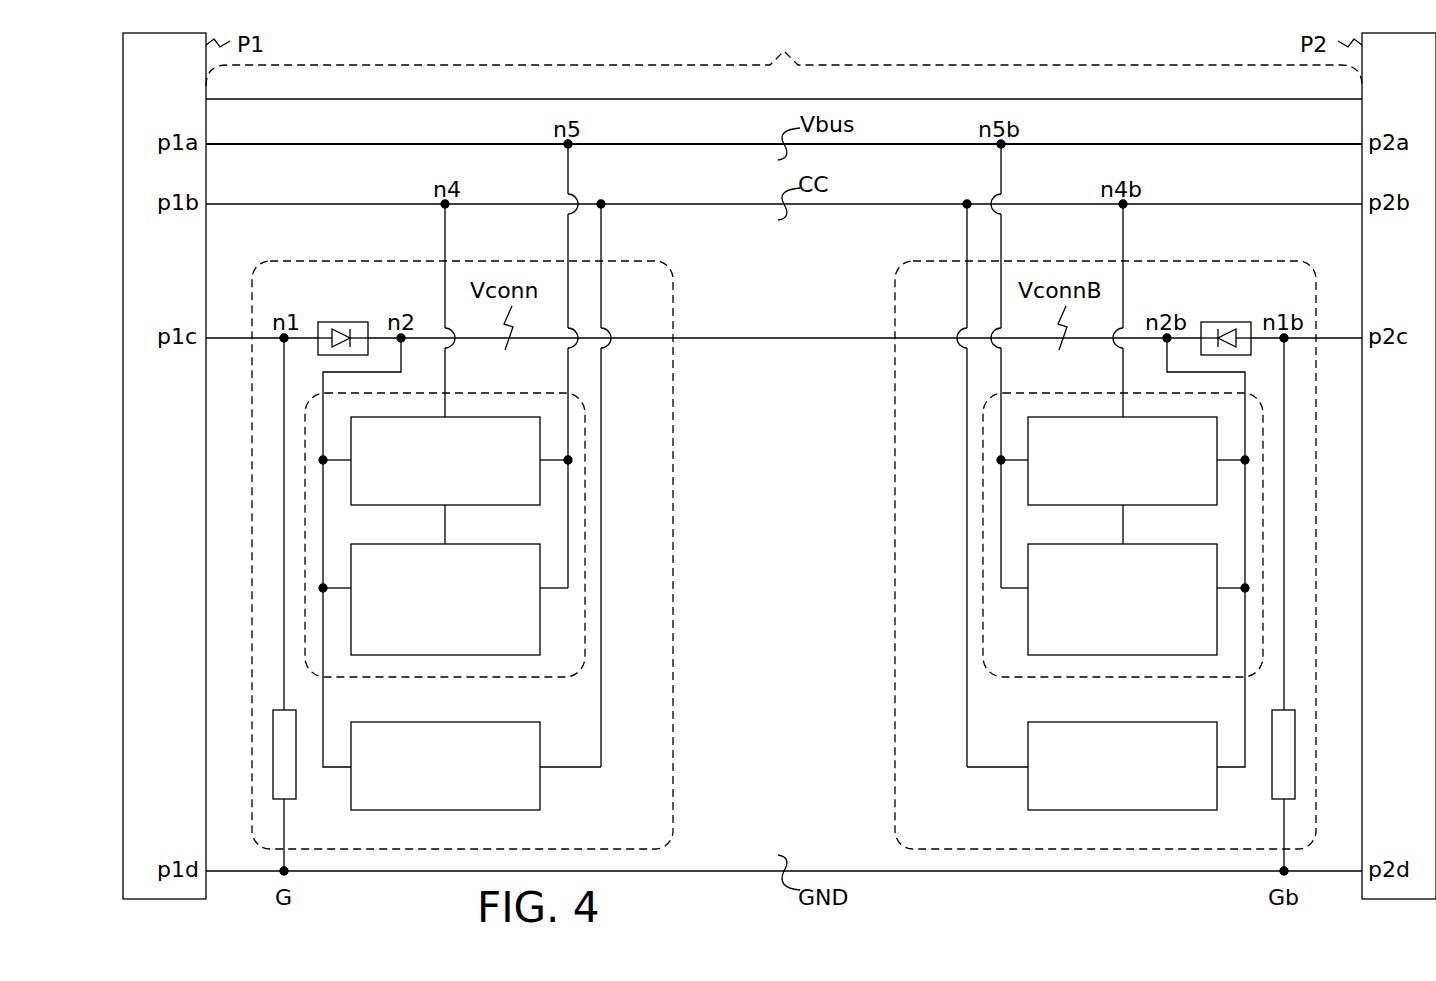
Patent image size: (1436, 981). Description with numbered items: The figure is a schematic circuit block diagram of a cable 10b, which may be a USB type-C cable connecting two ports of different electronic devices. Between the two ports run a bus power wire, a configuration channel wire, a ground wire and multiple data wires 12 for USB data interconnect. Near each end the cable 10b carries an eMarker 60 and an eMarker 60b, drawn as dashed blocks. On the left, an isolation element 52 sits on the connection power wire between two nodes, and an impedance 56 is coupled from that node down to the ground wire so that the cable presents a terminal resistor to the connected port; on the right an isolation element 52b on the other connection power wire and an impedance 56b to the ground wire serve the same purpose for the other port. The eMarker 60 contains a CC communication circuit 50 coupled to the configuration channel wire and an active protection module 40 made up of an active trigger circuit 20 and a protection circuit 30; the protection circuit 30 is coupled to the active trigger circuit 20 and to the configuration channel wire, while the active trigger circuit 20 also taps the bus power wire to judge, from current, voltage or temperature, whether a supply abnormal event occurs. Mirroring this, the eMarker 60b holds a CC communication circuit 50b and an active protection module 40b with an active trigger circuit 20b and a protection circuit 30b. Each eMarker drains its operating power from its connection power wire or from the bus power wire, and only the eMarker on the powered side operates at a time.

The cable 10b is at (784, 54).
The data wires 12 is at (757, 100).
The active trigger circuit 20 is at (418, 544).
The active trigger circuit 20b is at (1150, 544).
The protection circuit 30 is at (498, 507).
The protection circuit 30b is at (1070, 507).
The active protection module 40 is at (518, 678).
The active protection module 40b is at (1050, 678).
The CC communication circuit 50 is at (437, 721).
The CC communication circuit 50b is at (1131, 721).
The isolation element 52 is at (352, 322).
The isolation element 52b is at (1238, 322).
The impedance 56 is at (291, 800).
The impedance 56b is at (1277, 800).
The eMarker 60 is at (353, 262).
The eMarker 60b is at (1215, 262).